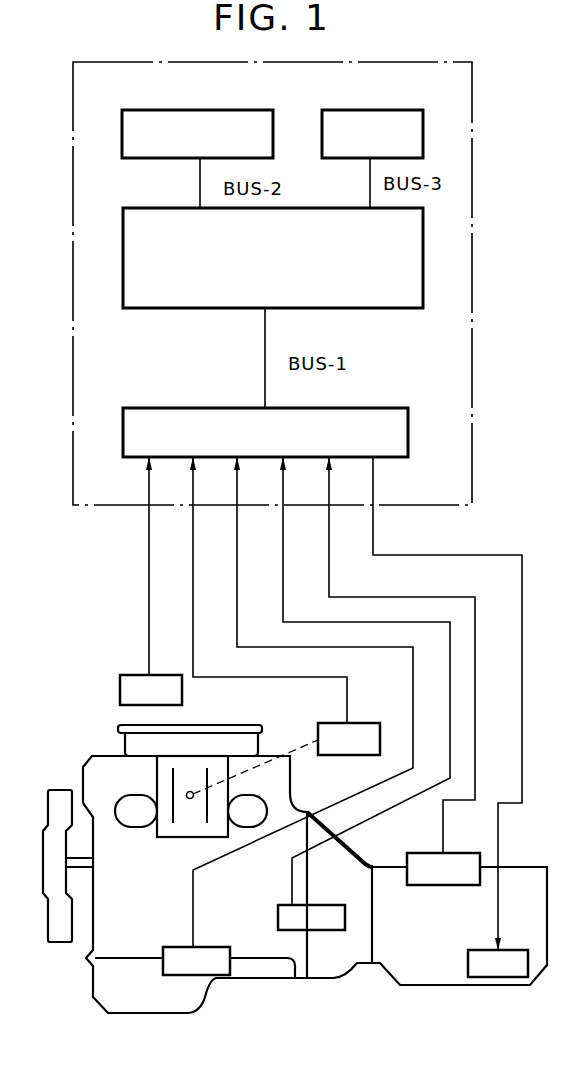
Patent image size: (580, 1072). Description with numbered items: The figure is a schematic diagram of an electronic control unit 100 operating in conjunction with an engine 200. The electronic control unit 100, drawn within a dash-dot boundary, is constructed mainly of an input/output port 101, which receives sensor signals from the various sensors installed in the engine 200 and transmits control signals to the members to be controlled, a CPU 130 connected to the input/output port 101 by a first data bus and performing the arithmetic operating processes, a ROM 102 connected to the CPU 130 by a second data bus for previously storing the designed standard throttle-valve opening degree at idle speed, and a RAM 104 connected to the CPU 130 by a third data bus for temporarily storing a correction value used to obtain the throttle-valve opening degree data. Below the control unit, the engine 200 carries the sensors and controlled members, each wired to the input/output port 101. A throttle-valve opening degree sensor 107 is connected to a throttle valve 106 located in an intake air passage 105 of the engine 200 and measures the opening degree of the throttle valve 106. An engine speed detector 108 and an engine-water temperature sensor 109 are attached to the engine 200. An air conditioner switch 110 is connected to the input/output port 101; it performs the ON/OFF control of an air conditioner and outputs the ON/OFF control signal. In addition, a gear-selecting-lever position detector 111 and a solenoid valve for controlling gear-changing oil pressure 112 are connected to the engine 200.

The electronic control unit 100 is at (394, 62).
The input/output port 101 is at (370, 408).
The ROM (read-only memory) 102 is at (273, 126).
The RAM (random access memory) 104 is at (395, 110).
The CPU (central processing unit) 130 is at (425, 262).
The intake air passage 105 is at (168, 818).
The throttle valve 106 is at (190, 799).
The throttle-valve opening degree sensor (TDS) 107 is at (372, 723).
The engine speed detector (ESD) 108 is at (278, 908).
The engine-water temperature sensor (WTS) 109 is at (167, 975).
The air conditioner switch (ACS) 110 is at (132, 675).
The gear-selecting-lever position detector (GPD) 111 is at (457, 853).
The solenoid valve for controlling gear-changing oil pressure (GOS) 112 is at (500, 977).
The engine 200 is at (87, 757).